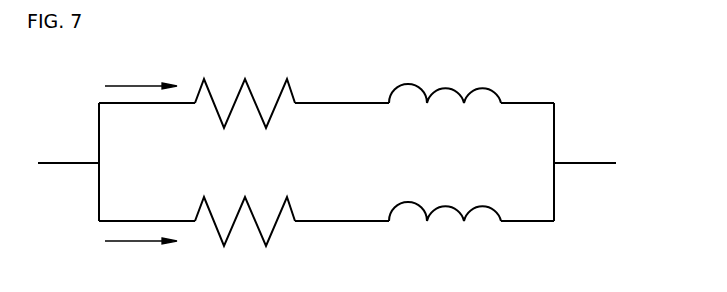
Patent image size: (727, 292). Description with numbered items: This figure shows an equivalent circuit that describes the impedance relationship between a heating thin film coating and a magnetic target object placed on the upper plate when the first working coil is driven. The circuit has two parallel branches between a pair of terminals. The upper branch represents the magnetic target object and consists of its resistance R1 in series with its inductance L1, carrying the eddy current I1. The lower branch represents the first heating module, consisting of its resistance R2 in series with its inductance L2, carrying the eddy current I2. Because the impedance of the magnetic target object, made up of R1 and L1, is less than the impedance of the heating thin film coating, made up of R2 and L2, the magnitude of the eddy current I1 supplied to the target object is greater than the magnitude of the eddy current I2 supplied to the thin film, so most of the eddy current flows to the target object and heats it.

The eddy current supplied to the magnetic target object I1 is at (141, 72).
The eddy current supplied to the first thin film I2 is at (141, 255).
The resistance of the magnetic object R1 is at (245, 91).
The resistance of the first heating module R2 is at (245, 234).
The inductance of the magnetic object L1 is at (445, 78).
The inductance of the first heating module L2 is at (445, 237).